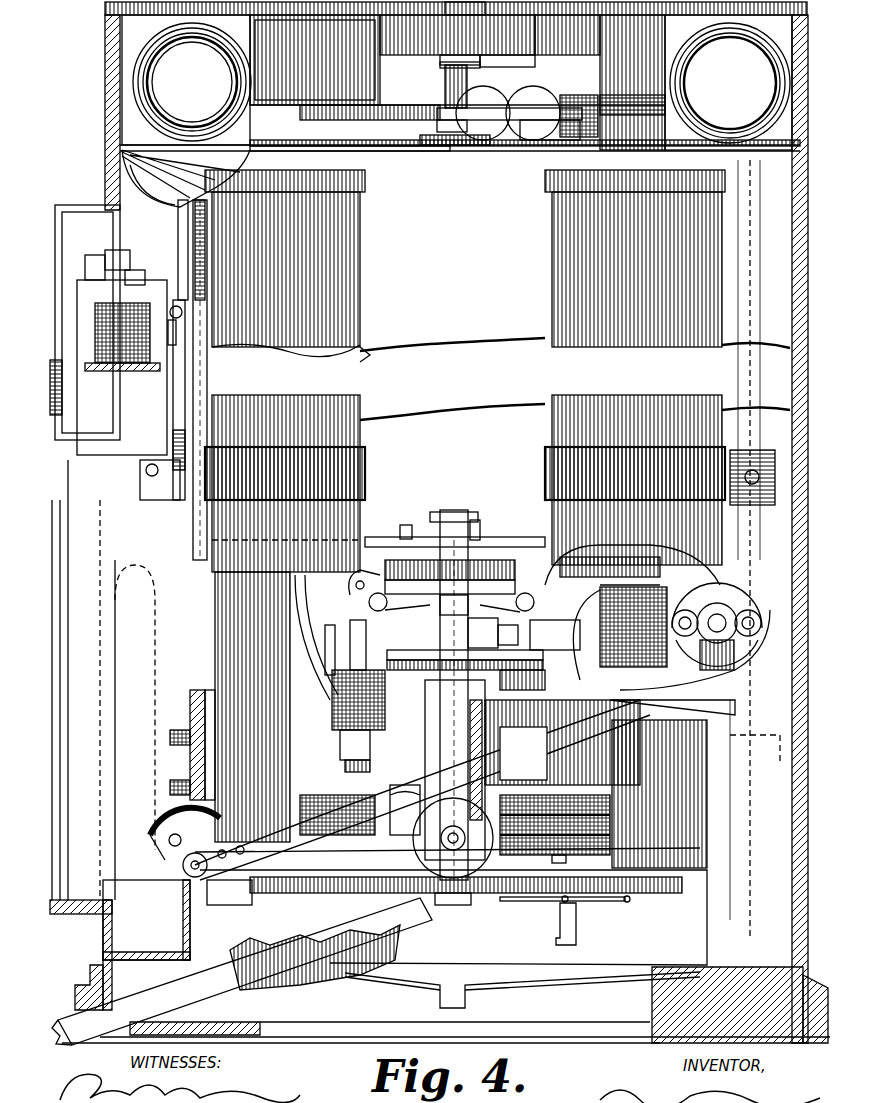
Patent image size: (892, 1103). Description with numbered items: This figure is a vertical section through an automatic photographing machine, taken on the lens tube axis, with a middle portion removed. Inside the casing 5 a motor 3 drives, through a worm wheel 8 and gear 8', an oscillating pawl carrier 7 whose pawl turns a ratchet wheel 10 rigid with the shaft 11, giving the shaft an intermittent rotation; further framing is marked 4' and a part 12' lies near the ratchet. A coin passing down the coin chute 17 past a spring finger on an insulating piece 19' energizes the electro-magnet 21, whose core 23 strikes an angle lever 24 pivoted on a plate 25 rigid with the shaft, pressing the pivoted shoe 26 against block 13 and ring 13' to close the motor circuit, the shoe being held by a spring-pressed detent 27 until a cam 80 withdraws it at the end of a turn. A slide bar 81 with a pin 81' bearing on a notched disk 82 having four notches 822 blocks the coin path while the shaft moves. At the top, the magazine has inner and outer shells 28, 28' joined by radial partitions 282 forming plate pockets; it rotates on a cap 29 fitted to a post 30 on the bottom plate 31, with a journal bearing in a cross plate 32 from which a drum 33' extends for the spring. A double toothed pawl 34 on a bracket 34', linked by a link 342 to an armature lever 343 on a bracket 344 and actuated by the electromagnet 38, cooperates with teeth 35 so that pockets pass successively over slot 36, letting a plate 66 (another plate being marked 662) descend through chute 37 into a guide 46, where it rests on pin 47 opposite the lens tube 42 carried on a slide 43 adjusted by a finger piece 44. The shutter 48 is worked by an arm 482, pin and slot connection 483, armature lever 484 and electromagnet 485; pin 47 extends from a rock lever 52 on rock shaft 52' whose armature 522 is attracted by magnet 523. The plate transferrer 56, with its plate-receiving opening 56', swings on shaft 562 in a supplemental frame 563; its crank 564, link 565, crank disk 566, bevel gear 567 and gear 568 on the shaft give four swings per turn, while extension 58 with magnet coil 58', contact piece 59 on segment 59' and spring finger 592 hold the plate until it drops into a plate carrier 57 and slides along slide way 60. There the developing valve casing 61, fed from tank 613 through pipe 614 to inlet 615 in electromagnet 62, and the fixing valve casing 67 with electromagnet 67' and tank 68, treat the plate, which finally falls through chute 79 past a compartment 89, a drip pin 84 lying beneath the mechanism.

The motor 3 is at (745, 650).
The frame bracket 4' is at (532, 770).
The machine casing 5 is at (800, 884).
The pawl carrier 7 is at (483, 631).
The worm wheel 8 is at (630, 569).
The gear 8' is at (671, 649).
The ratchet wheel 10 is at (405, 690).
The shaft 11 is at (452, 520).
The gear 12' is at (518, 673).
The block 13 is at (452, 549).
The ring 13' is at (436, 608).
The coin chute 17 is at (155, 642).
The insulating piece 19' is at (334, 744).
The electro-magnet 21 is at (336, 702).
The core 23 is at (338, 688).
The angle lever 24 is at (369, 602).
The plate 25 is at (509, 637).
The pivoted shoe 26 is at (360, 548).
The spring-pressed detent 27 is at (471, 623).
The inner shell 28 is at (198, 82).
The outer shell 28' is at (189, 82).
The radial partitions 282 is at (312, 152).
The cap 29 is at (478, 63).
The post 30 is at (445, 80).
The bottom plate 31 is at (422, 148).
The cross plate 32 is at (332, 20).
The drum 33' is at (526, 51).
The double toothed pawl 34 is at (441, 102).
The bracket 34' is at (426, 132).
The link 342 is at (468, 48).
The armature lever 343 is at (495, 112).
The bracket 344 is at (640, 135).
The teeth 35 is at (636, 120).
The slot 36 is at (124, 152).
The chute 37 is at (162, 185).
The electromagnet 38 is at (535, 135).
The lens tube 42 is at (140, 468).
The slide 43 is at (63, 520).
The finger piece 44 is at (60, 582).
The guide 46 is at (262, 272).
The pin 47 is at (176, 505).
The shutter 48 is at (120, 270).
The arm 482 is at (128, 252).
The pin and slot connection 483 is at (132, 278).
The armature lever 484 is at (88, 254).
The electromagnet 485 is at (115, 350).
The rock lever 52 is at (156, 400).
The rock shaft 52' is at (300, 436).
The armature 522 is at (182, 345).
The electric magnet 523 is at (170, 308).
The plate transferrer 56 is at (170, 745).
The plate-receiving opening 56' is at (185, 729).
The shaft 562 is at (185, 872).
The supplemental frame 563 is at (240, 905).
The crank 564 is at (183, 866).
The link 565 is at (310, 878).
The crank disk 566 is at (420, 895).
The bevel gear 567 is at (470, 895).
The gear 568 is at (518, 893).
The plate carriers 57 is at (210, 895).
The extension 58 is at (154, 790).
The magnet coil 58' is at (154, 752).
The contact piece 59 is at (182, 812).
The segment 59' is at (146, 825).
The spring finger 592 is at (150, 832).
The slide way 60 is at (607, 905).
The valve casing 61 is at (405, 870).
The tank 613 is at (362, 360).
The pipe 614 is at (350, 650).
The inlet 615 is at (345, 764).
The electromagnet 62 is at (412, 800).
The plate 66 is at (240, 35).
The ring 662 is at (700, 42).
The fixing solution valve casing 67 is at (690, 794).
The electromagnet 67' is at (686, 705).
The tank 68 is at (556, 305).
The chute 79 is at (332, 985).
The cam 80 is at (350, 585).
The slide bar 81 is at (455, 511).
The pin 81' is at (417, 514).
The notched disk 82 is at (460, 530).
The notches 822 is at (480, 538).
The drip pin 84 is at (525, 986).
The compartment 89 is at (132, 945).